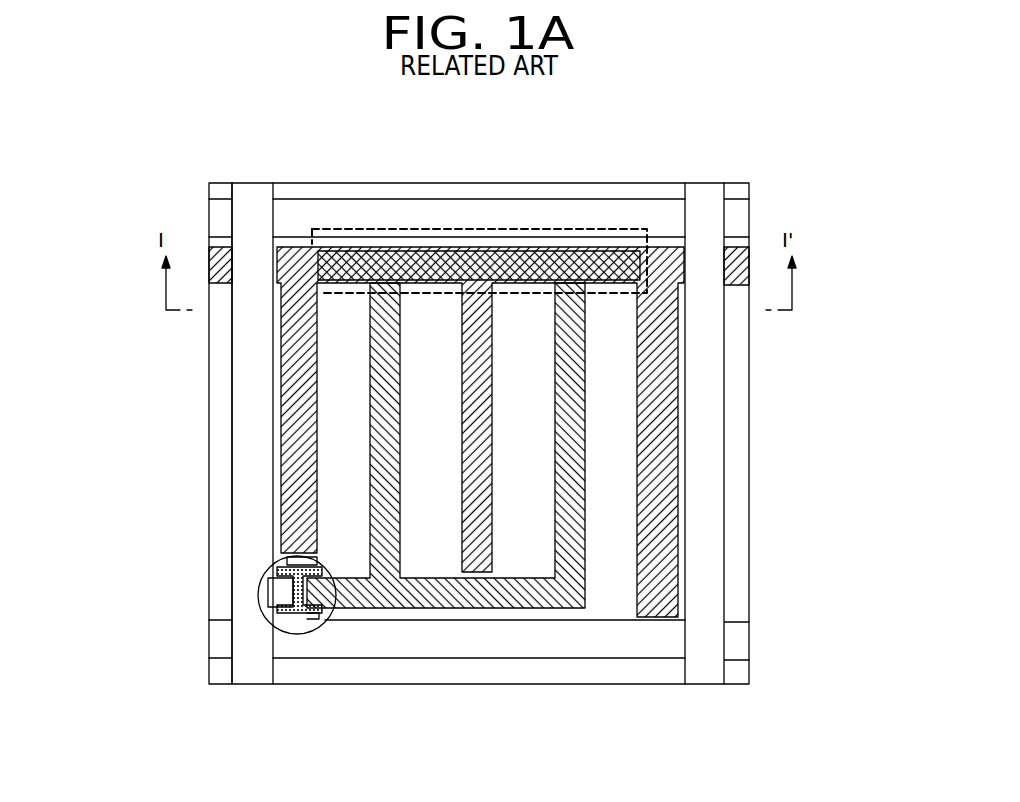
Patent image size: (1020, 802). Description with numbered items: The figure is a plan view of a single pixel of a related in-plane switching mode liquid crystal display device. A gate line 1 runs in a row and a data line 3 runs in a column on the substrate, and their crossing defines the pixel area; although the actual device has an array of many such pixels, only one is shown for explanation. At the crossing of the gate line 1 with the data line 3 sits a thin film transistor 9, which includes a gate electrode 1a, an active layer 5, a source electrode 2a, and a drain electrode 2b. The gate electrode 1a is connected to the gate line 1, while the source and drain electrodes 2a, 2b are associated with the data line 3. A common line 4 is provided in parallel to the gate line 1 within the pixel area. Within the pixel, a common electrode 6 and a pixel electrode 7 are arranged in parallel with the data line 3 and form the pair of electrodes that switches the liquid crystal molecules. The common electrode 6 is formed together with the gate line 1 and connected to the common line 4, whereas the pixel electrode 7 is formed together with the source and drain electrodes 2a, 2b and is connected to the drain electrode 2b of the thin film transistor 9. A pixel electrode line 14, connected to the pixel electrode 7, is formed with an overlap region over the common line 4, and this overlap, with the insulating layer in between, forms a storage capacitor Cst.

The gate line 1 is at (553, 643).
The gate electrode 1a is at (293, 562).
The source electrode 2a is at (277, 585).
The drain electrode 2b is at (322, 628).
The data line 3 is at (248, 668).
The common line 4 is at (225, 255).
The active layer 5 is at (293, 613).
The common electrode 6 is at (305, 316).
The pixel electrode 7 is at (388, 316).
The thin film transistor 9 is at (259, 616).
The pixel electrode line 14 is at (618, 268).
The storage capacitor Cst is at (522, 229).